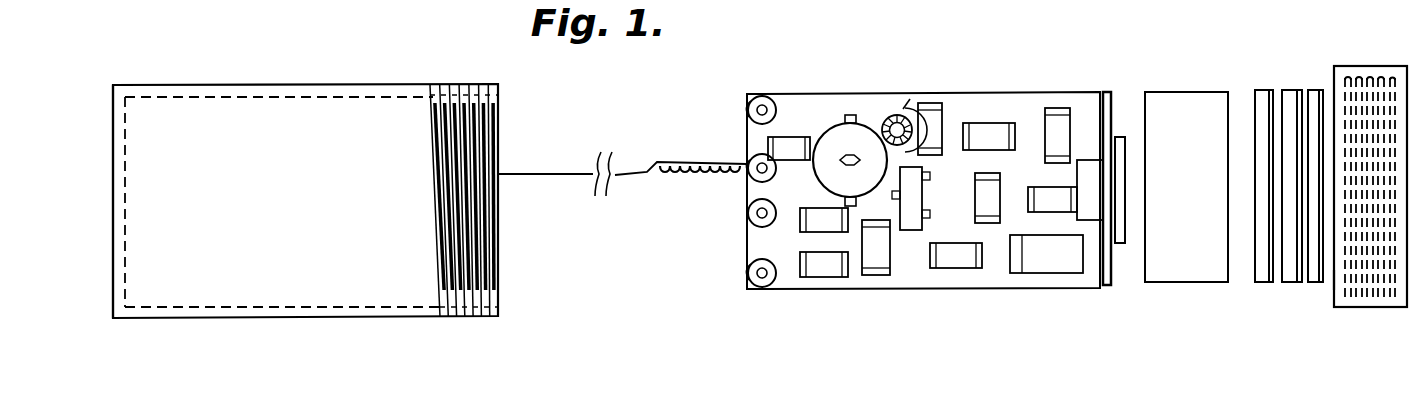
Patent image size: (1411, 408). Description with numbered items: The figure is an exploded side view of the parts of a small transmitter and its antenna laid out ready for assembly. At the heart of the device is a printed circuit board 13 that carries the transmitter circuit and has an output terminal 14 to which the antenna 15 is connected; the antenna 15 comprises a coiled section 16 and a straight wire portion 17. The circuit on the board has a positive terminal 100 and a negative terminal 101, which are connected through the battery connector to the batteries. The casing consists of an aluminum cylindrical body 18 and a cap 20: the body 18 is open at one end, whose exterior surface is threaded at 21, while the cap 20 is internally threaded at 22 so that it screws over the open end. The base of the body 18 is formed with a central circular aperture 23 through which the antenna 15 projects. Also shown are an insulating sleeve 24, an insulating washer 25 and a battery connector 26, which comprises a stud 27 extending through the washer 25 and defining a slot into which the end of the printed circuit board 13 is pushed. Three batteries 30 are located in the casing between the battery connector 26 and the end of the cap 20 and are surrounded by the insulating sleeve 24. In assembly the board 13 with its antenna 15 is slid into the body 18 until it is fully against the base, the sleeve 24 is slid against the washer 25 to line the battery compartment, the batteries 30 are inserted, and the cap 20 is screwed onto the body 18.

The printed circuit board 13 is at (810, 93).
The output terminal 14 is at (750, 157).
The antenna 15 is at (638, 148).
The coiled section 16 is at (700, 177).
The straight wire portion 17 is at (619, 178).
The cylindrical body 18 is at (263, 112).
The cap 20 is at (1372, 303).
The thread 21 is at (470, 135).
The internal thread 22 is at (1338, 278).
The central circular aperture 23 is at (112, 191).
The insulating sleeve 24 is at (1193, 90).
The insulating washer 25 is at (1100, 90).
The battery connector 26 is at (1122, 200).
The stud 27 is at (1088, 213).
The batteries 30 is at (1313, 90).
The positive terminal 100 is at (1110, 190).
The negative terminal 101 is at (762, 287).